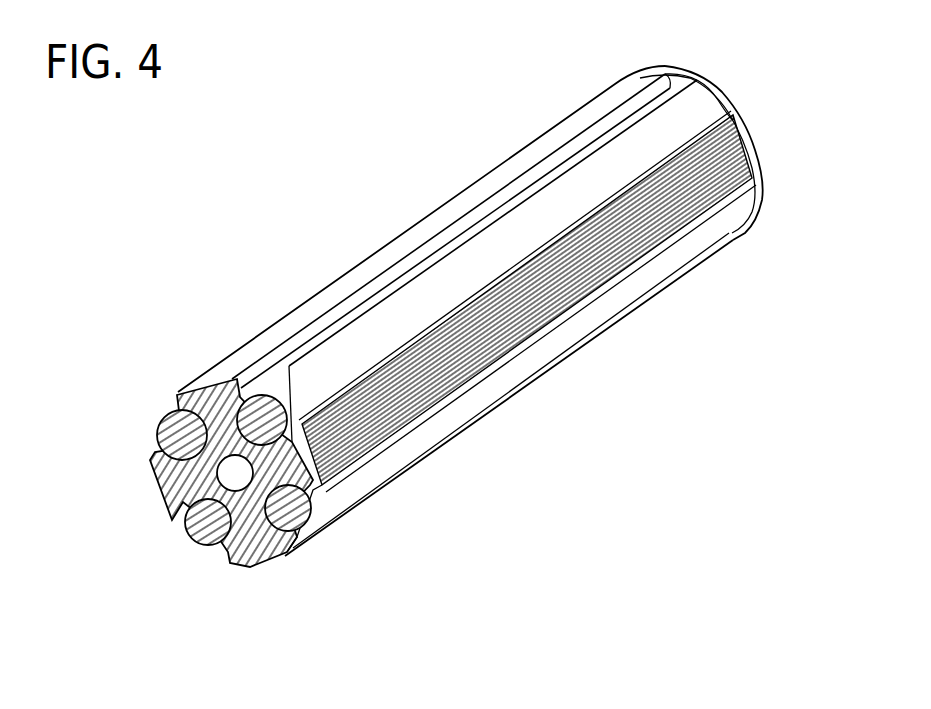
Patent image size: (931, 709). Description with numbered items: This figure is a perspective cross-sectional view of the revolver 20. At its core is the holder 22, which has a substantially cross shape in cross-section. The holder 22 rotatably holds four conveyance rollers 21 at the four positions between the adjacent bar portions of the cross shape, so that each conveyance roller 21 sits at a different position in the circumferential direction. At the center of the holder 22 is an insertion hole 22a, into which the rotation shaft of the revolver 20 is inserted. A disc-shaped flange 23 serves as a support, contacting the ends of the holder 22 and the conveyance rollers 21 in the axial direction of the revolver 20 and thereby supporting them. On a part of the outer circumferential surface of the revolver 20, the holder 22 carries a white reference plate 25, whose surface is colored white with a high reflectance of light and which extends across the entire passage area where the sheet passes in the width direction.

The revolver 20 is at (356, 216).
The conveyance roller 21 is at (253, 414).
The holder 22 is at (214, 391).
The insertion hole 22a is at (232, 473).
The flange 23 is at (758, 131).
The white reference plate 25 is at (555, 287).